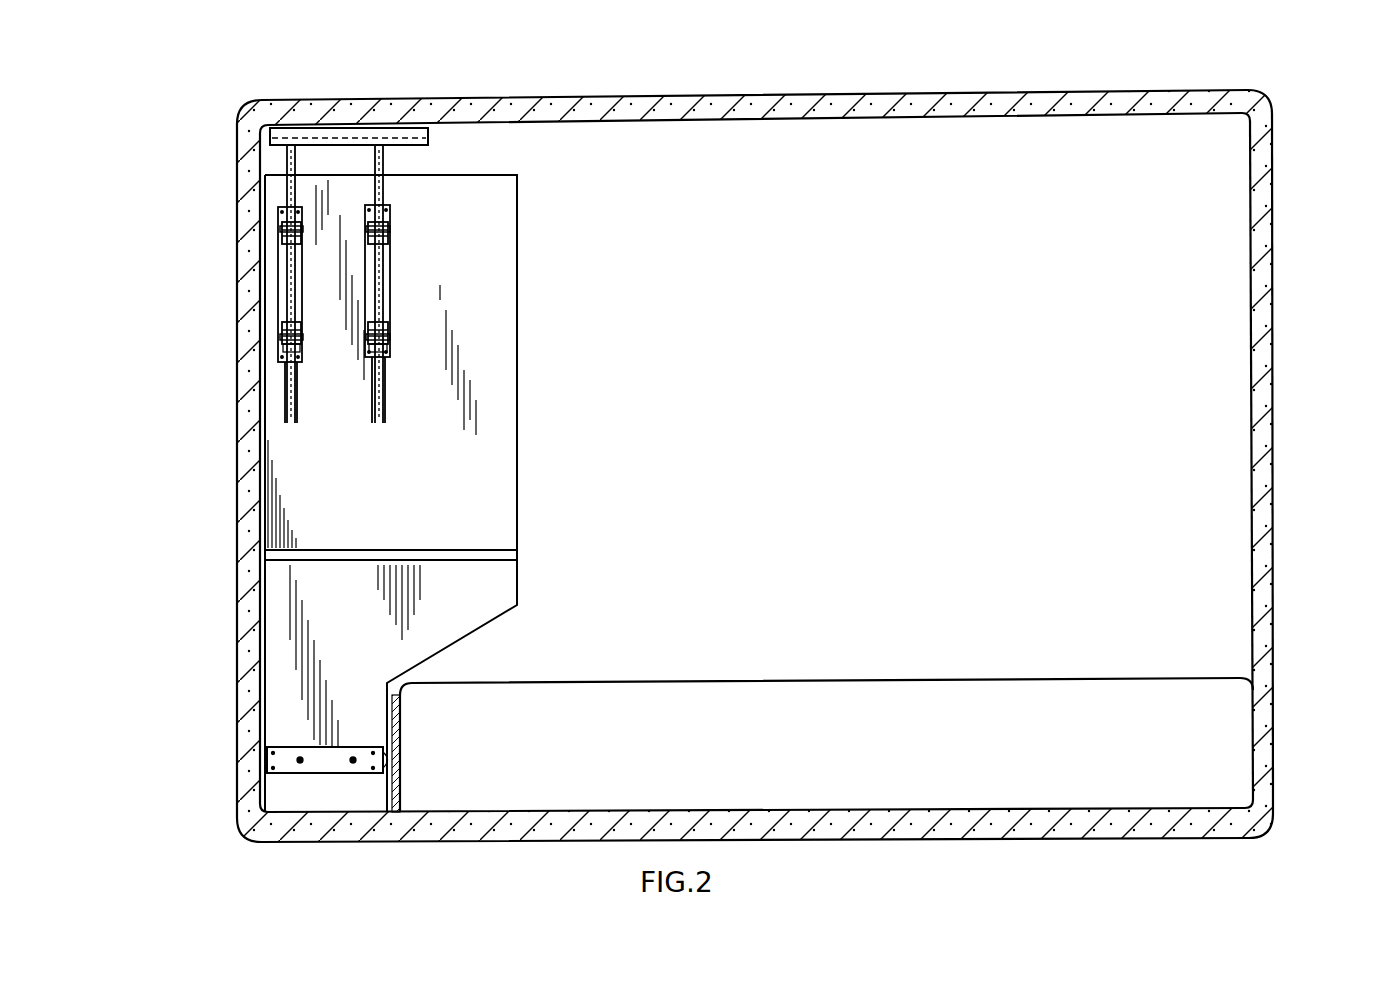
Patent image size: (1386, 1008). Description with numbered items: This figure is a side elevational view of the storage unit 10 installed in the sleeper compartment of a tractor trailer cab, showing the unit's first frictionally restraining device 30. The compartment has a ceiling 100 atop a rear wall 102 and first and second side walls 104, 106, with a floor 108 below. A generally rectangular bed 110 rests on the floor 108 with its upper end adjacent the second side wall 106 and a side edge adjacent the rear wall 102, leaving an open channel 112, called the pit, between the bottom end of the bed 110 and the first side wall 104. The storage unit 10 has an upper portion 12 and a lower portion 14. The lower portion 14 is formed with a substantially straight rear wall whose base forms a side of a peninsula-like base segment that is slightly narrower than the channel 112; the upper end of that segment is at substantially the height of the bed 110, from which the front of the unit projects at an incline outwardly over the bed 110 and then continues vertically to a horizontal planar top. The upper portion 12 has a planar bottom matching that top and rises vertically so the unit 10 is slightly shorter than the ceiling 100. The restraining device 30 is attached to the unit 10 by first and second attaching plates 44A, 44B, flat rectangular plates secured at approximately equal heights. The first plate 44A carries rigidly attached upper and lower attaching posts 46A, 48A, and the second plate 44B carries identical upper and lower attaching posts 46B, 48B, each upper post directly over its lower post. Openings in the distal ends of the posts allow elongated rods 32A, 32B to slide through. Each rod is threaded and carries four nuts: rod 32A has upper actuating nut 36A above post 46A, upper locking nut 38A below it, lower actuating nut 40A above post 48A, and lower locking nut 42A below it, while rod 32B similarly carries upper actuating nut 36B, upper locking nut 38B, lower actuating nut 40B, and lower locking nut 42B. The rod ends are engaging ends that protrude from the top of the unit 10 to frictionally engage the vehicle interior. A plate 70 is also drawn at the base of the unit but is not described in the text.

The storage unit 10 is at (445, 485).
The upper portion 12 is at (479, 538).
The lower portion 14 is at (479, 606).
The first frictionally restraining device 30 is at (317, 94).
The elongated rod 32A is at (383, 159).
The elongated rod 32B is at (295, 159).
The upper actuating nut 36A is at (390, 226).
The upper actuating nut 36B is at (287, 226).
The upper locking nut 38A is at (390, 245).
The upper locking nut 38B is at (285, 240).
The lower actuating nut 40A is at (390, 331).
The lower actuating nut 40B is at (290, 331).
The lower locking nut 42A is at (392, 351).
The lower locking nut 42B is at (286, 347).
The first attaching plate 44A is at (390, 360).
The second attaching plate 44B is at (302, 364).
The upper attaching post 46A is at (392, 234).
The upper attaching post 46B is at (290, 229).
The lower attaching post 48A is at (392, 341).
The lower attaching post 48B is at (287, 339).
The mounting plate 70 is at (340, 786).
The ceiling 100 is at (912, 104).
The rear wall 102 is at (1046, 260).
The first side wall 104 is at (250, 621).
The second side wall 106 is at (1263, 426).
The floor 108 is at (1008, 826).
The bed 110 is at (952, 698).
The open channel 112 is at (392, 802).